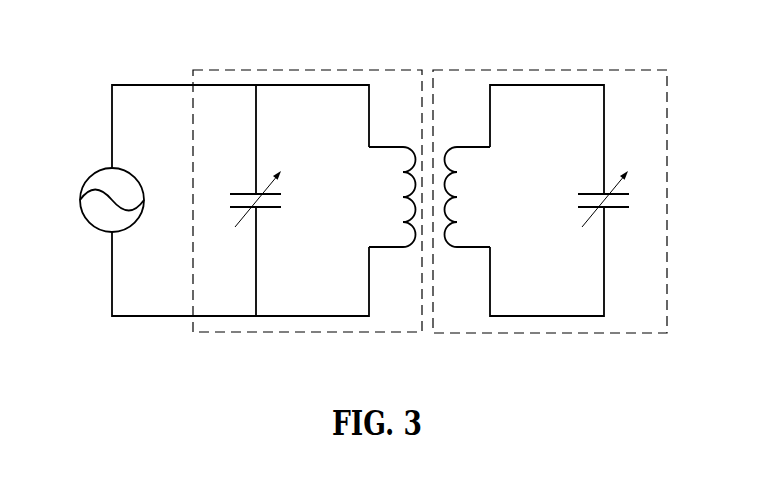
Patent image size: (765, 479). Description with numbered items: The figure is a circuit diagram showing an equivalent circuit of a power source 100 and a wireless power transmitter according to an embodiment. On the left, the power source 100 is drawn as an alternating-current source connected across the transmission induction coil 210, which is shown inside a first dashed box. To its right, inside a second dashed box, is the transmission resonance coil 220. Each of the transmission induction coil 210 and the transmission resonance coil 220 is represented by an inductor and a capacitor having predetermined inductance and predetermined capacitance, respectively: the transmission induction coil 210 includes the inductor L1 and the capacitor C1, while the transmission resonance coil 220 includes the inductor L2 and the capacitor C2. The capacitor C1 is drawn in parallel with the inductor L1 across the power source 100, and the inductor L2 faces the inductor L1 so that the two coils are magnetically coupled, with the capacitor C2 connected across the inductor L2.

The power source 100 is at (89, 177).
The transmission induction coil 210 is at (336, 68).
The transmission resonance coil 220 is at (494, 68).
The capacitor C1 is at (242, 200).
The inductor L1 is at (392, 197).
The inductor L2 is at (467, 197).
The capacitor C2 is at (619, 199).